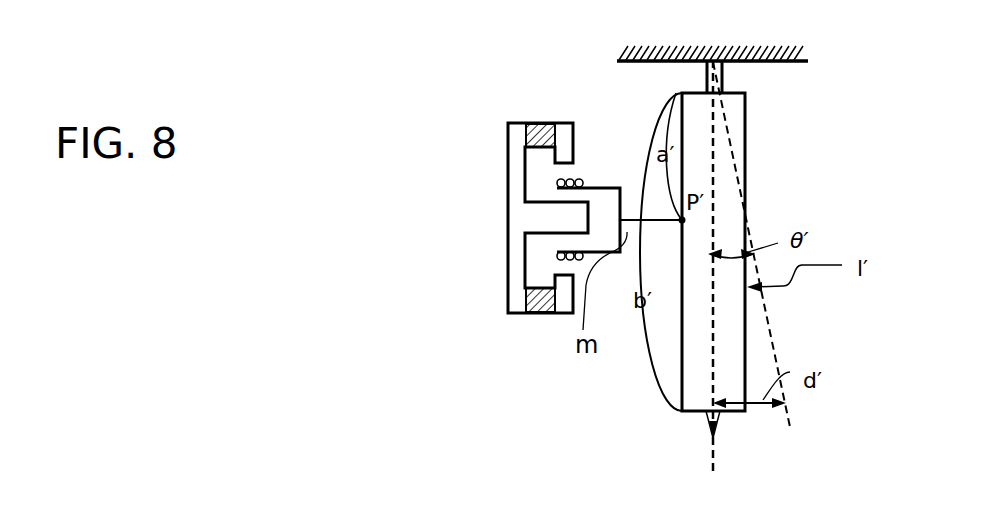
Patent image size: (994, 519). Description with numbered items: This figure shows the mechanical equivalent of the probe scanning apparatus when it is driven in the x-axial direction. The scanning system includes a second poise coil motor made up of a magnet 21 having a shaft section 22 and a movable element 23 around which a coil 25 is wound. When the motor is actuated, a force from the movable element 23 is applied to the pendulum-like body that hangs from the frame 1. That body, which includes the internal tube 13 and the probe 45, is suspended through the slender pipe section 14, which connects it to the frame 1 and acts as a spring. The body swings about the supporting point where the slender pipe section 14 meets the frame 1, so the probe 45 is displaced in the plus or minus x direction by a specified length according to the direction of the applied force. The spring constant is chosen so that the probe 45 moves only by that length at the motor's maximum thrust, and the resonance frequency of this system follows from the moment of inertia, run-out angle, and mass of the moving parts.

The frame 1 is at (738, 53).
The internal tube 13 is at (766, 340).
The slender pipe section 14 is at (724, 76).
The magnet 21 is at (538, 123).
The shaft section 22 is at (538, 223).
The movable element 23 is at (592, 187).
The coil 25 is at (556, 252).
The probe 45 is at (705, 418).